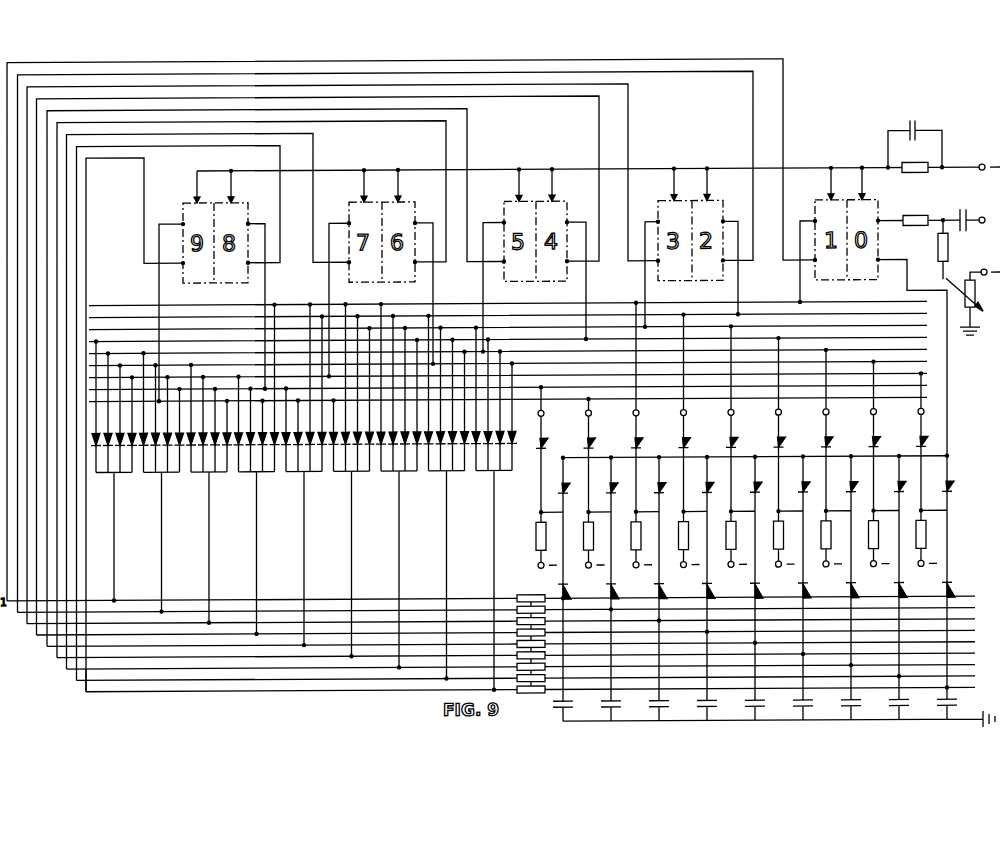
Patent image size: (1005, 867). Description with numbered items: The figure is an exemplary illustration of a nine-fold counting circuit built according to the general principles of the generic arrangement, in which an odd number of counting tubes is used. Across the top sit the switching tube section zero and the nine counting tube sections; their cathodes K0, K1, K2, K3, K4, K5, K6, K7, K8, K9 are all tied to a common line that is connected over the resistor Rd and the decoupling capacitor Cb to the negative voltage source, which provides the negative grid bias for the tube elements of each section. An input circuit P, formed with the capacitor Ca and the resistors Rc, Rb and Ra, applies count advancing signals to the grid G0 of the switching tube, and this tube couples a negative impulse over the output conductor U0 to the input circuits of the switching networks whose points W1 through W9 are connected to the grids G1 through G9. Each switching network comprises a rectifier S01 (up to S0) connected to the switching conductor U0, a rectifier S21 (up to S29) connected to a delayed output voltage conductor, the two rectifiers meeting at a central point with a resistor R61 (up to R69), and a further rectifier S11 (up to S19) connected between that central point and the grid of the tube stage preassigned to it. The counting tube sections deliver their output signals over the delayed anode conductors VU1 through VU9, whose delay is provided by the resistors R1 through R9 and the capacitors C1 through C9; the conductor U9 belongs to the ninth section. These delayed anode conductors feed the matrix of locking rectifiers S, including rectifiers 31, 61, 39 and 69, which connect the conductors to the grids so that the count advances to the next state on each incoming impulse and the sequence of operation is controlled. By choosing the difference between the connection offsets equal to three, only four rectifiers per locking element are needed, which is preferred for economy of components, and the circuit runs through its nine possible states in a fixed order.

The cathode of counting tube 9 K9 is at (203, 187).
The cathode of counting tube 8 K8 is at (237, 187).
The cathode of counting tube 7 K7 is at (370, 186).
The cathode of counting tube 6 K6 is at (404, 186).
The cathode of counting tube 5 K5 is at (525, 185).
The cathode of counting tube 4 K4 is at (558, 185).
The cathode of counting tube 3 K3 is at (680, 185).
The cathode of counting tube 2 K2 is at (713, 184).
The cathode of counting tube 1 K1 is at (837, 184).
The cathode of switching tube section 0 K0 is at (868, 184).
The decoupling capacitor Cb is at (915, 135).
The resistor Rd is at (933, 176).
The capacitor Ca is at (967, 211).
The input circuit P is at (987, 222).
The resistor Rc is at (931, 229).
The resistor Rb is at (951, 249).
The resistor Ra is at (973, 302).
The grid of switching tube section 0 G0 is at (890, 213).
The output conductor U0 is at (923, 358).
The grid of counting tube 1 G1 is at (518, 304).
The grid of counting tube 9 G9 is at (518, 400).
The switching network point W1 is at (531, 403).
The switching network point W9 is at (910, 395).
The rectifier S11 is at (551, 432).
The rectifier S19 is at (944, 430).
The rectifier S01 is at (555, 476).
The rectifier S0 is at (954, 474).
The rectifier S21 is at (558, 597).
The rectifier S29 is at (957, 595).
The resistor R61 is at (533, 508).
The resistor R69 is at (924, 506).
The anode resistor R1 is at (531, 591).
The anode resistor R9 is at (531, 698).
The capacitor C1 is at (559, 711).
The capacitor C9 is at (952, 709).
The delayed anode conductor VU1 is at (504, 599).
The delayed anode conductor VU9 is at (543, 689).
The output conductor of counting tube 9 U9 is at (77, 686).
The rectifier S is at (93, 406).
The rectifier 31 is at (105, 446).
The rectifier 61 is at (135, 446).
The rectifier 39 is at (480, 445).
The rectifier 69 is at (517, 416).